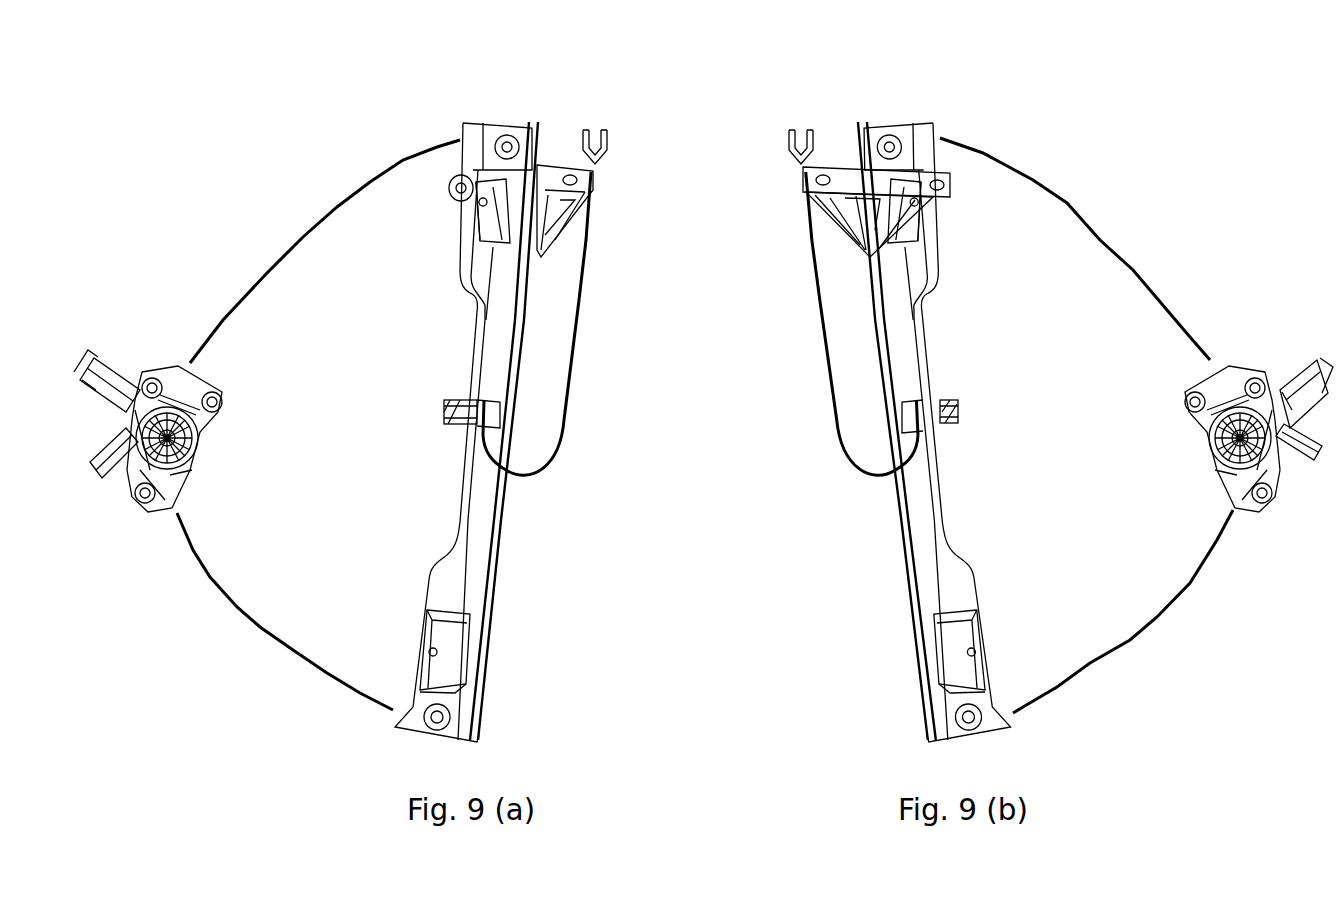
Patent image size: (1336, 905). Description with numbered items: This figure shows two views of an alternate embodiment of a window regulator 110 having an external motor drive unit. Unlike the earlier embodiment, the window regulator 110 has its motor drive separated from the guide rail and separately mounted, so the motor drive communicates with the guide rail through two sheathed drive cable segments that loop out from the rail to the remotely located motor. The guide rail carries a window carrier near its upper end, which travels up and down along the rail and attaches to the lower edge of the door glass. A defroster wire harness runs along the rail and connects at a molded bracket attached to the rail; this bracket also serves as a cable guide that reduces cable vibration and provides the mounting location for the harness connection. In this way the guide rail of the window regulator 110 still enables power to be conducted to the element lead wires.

The window regulator 110 is at (458, 123).